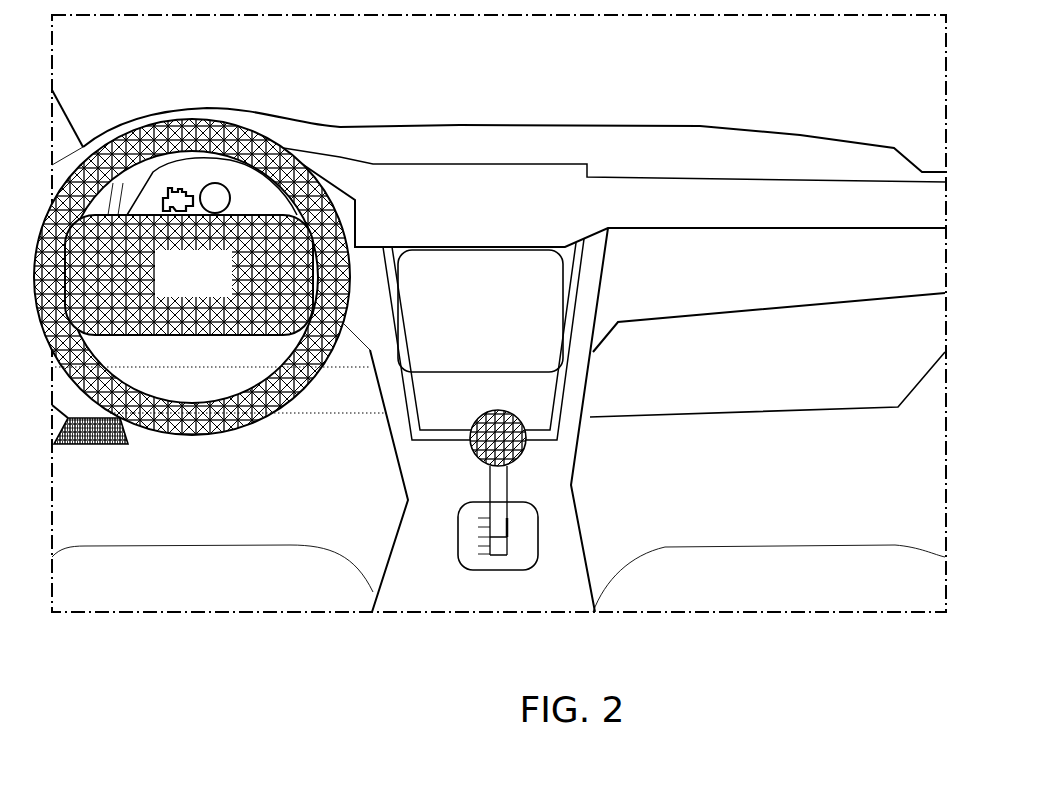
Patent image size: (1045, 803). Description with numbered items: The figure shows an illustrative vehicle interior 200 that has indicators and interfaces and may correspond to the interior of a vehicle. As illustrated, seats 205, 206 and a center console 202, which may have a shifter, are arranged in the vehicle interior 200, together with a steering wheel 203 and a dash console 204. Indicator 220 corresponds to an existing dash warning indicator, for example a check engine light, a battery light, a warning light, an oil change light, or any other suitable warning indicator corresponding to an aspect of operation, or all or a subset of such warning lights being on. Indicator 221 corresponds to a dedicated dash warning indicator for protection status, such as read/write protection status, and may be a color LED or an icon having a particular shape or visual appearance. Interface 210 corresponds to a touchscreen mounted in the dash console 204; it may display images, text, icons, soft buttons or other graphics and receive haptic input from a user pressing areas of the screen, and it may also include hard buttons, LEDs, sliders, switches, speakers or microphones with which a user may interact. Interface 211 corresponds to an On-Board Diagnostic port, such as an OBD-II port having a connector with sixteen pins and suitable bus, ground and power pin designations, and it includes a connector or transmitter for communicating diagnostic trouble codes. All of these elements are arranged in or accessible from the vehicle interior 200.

The vehicle interior 200 is at (894, 148).
The center console 202 is at (404, 600).
The steering wheel 203 is at (171, 284).
The dash console 204 is at (477, 216).
The seat 205 is at (180, 588).
The seat 206 is at (775, 601).
The interface 210 is at (428, 289).
The interface 211 is at (88, 445).
The indicator 220 is at (178, 186).
The indicator 221 is at (228, 183).